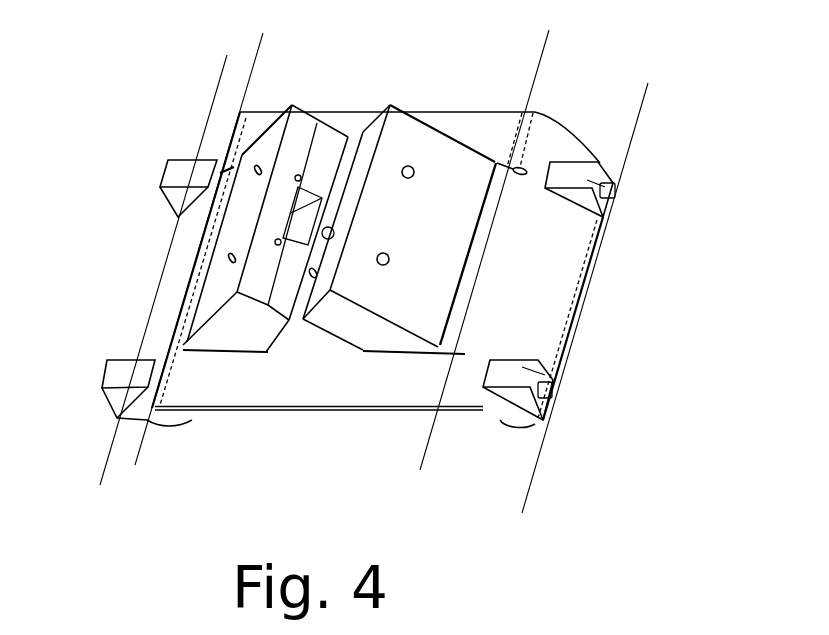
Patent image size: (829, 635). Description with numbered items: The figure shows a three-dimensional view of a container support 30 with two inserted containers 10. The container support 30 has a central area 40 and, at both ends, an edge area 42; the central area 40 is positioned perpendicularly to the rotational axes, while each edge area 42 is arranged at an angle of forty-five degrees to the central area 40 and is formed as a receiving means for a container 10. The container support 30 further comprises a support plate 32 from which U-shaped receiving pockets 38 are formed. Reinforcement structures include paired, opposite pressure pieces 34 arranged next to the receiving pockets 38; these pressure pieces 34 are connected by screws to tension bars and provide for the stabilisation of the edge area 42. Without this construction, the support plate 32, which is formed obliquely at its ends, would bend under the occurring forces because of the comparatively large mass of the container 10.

The container 10 is at (358, 179).
The container support 30 is at (457, 116).
The support plate 32 is at (540, 115).
The pressure piece 34 is at (185, 178).
The receiving pocket 38 is at (102, 390).
The central area 40 is at (377, 283).
The edge area 42 is at (324, 263).